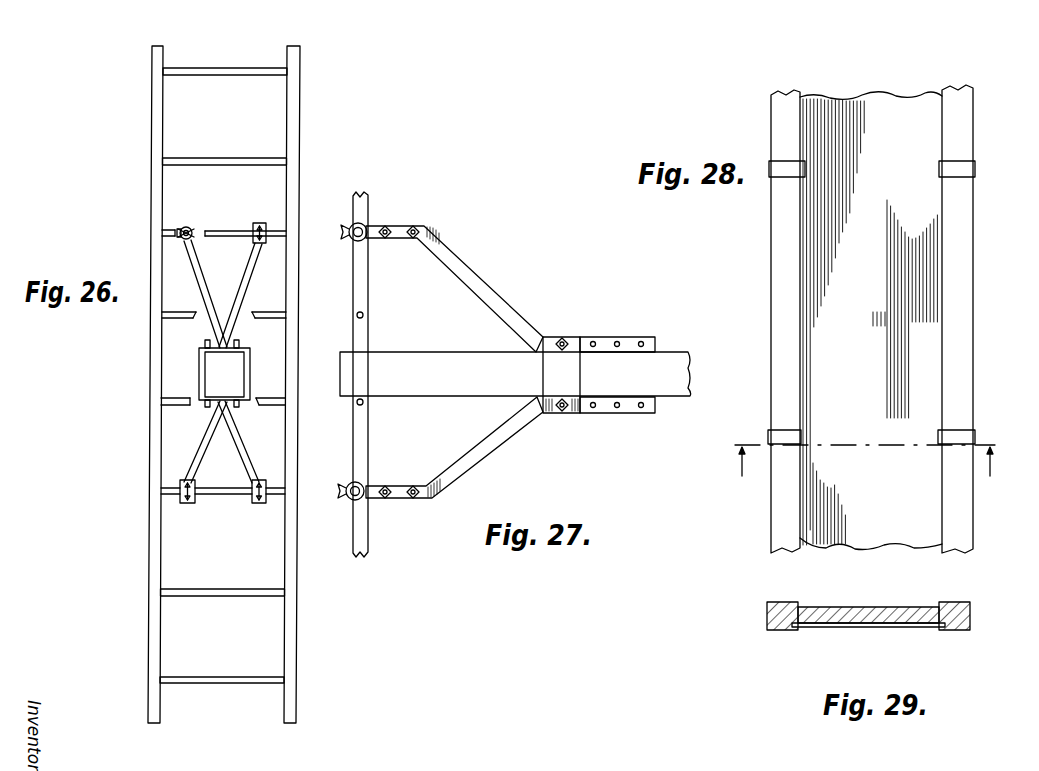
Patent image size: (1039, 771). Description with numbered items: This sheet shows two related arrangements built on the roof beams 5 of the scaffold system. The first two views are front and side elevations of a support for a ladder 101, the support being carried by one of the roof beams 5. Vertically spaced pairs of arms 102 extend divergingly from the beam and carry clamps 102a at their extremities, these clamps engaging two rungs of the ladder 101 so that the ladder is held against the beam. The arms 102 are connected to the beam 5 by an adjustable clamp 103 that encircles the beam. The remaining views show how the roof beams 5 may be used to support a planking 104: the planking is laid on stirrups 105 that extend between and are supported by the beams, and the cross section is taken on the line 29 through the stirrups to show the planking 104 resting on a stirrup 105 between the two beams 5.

In FIG. 26, the roof beam 5 is at (218, 371).
In FIG. 27, the roof beam 5 is at (681, 384).
In FIG. 28, the roof beam 5 is at (773, 298).
In FIG. 29, the roof beam 5 is at (771, 621).
In FIG. 26, the ladder 101 is at (289, 431).
In FIG. 27, the ladder 101 is at (356, 405).
In FIG. 26, the arms 102 is at (253, 268).
In FIG. 27, the arms 102 is at (493, 295).
In FIG. 26, the clamps 102a is at (258, 229).
In FIG. 27, the clamps 102a is at (352, 241).
In FIG. 26, the adjustable clamp 103 is at (251, 385).
In FIG. 27, the adjustable clamp 103 is at (573, 342).
In FIG. 28, the planking 104 is at (871, 321).
In FIG. 29, the planking 104 is at (886, 609).
In FIG. 28, the stirrups 105 is at (963, 170).
In FIG. 29, the stirrups 105 is at (897, 628).
In FIG. 28, the section line of Fig. 29 is at (864, 459).